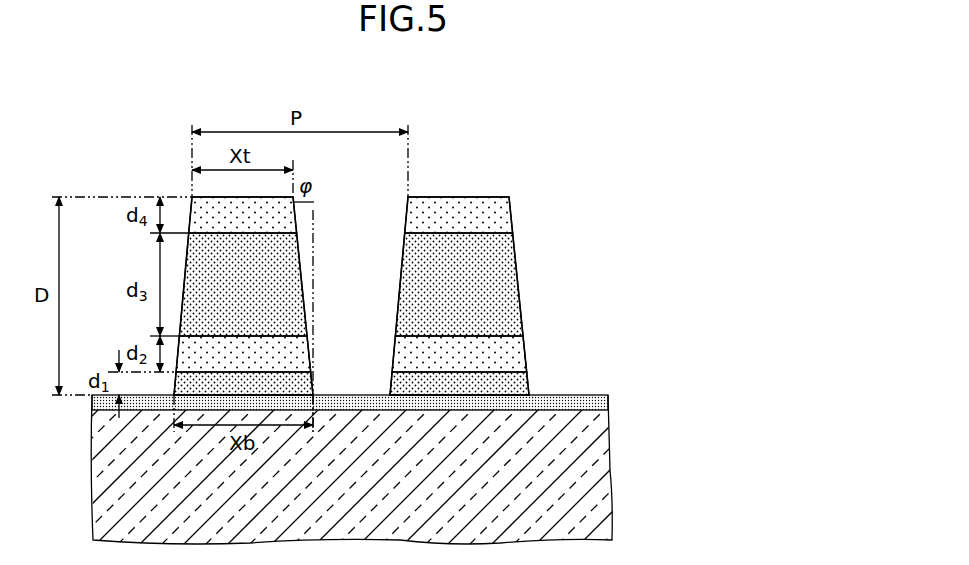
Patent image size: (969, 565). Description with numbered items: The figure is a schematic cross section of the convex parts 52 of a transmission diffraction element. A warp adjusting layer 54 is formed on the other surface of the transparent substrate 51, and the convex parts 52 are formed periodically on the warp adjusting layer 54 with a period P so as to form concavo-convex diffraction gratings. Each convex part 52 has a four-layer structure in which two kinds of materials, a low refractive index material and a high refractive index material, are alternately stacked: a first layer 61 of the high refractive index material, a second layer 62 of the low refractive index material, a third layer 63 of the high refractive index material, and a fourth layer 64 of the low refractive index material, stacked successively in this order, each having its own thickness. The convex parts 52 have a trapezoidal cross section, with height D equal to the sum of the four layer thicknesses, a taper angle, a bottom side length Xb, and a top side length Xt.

The transparent substrate 51 is at (602, 455).
The warp adjusting layer 54 is at (602, 402).
The convex part 52 is at (600, 197).
The first layer 61 is at (505, 385).
The second layer 62 is at (507, 355).
The third layer 63 is at (507, 292).
The fourth layer 64 is at (503, 215).